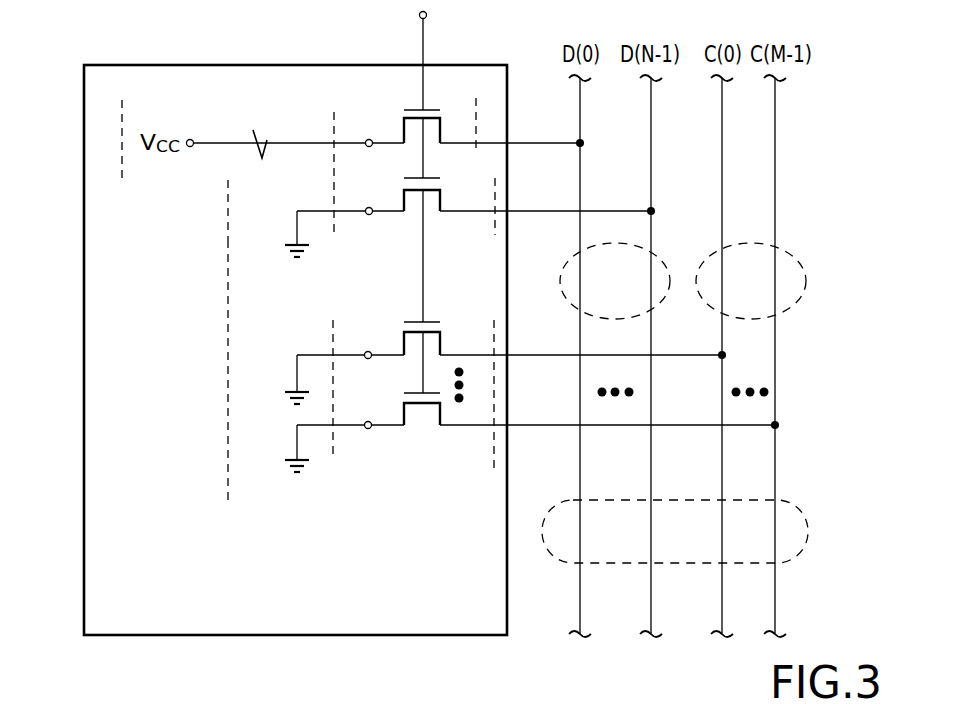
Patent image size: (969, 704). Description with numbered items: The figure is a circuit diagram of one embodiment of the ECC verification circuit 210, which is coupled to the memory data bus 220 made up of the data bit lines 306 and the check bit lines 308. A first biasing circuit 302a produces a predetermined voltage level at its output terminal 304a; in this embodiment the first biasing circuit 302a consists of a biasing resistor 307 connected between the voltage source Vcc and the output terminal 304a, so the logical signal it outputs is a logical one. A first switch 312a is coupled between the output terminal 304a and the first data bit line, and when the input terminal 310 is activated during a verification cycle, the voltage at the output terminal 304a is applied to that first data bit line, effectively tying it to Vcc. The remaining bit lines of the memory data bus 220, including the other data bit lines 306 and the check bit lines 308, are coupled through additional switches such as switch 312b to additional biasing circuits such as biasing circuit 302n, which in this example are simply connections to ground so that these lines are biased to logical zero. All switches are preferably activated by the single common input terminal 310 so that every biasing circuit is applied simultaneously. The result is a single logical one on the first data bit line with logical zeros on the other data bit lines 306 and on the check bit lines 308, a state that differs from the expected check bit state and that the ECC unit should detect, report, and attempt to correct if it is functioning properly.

The ECC verification circuit 210 is at (163, 601).
The memory data bus 220 is at (806, 512).
The first biasing circuit 302a is at (135, 116).
The additional biasing circuit 302n is at (246, 197).
The output terminal 304a is at (369, 139).
The data bit lines 306 is at (662, 256).
The biasing resistor 307 is at (253, 130).
The check bit lines 308 is at (800, 258).
The input terminal 310 is at (425, 44).
The first switch 312a is at (445, 108).
The additional switch 312b is at (446, 183).